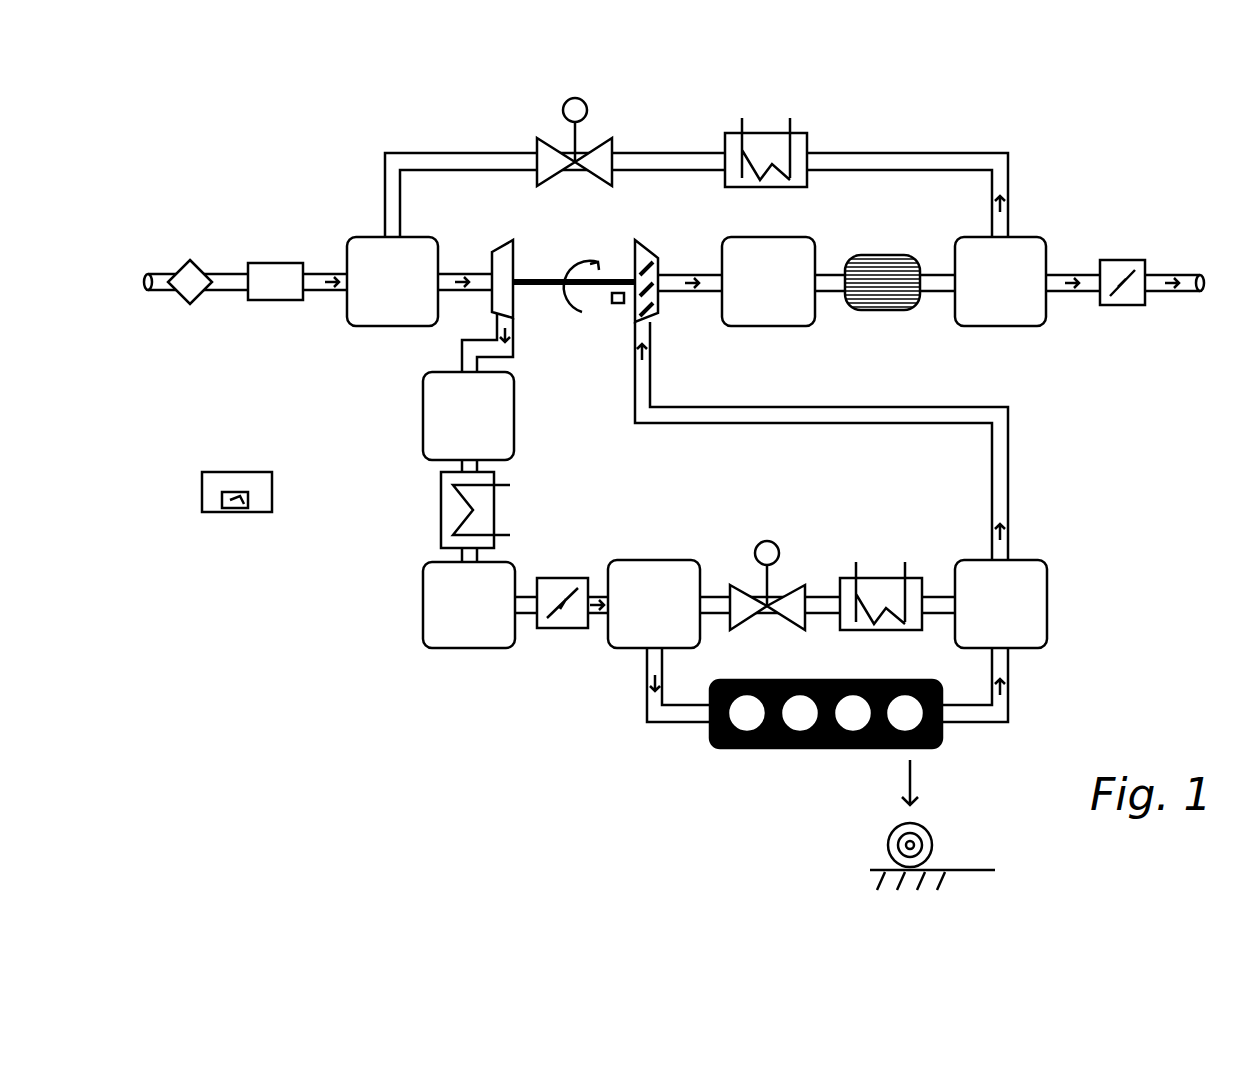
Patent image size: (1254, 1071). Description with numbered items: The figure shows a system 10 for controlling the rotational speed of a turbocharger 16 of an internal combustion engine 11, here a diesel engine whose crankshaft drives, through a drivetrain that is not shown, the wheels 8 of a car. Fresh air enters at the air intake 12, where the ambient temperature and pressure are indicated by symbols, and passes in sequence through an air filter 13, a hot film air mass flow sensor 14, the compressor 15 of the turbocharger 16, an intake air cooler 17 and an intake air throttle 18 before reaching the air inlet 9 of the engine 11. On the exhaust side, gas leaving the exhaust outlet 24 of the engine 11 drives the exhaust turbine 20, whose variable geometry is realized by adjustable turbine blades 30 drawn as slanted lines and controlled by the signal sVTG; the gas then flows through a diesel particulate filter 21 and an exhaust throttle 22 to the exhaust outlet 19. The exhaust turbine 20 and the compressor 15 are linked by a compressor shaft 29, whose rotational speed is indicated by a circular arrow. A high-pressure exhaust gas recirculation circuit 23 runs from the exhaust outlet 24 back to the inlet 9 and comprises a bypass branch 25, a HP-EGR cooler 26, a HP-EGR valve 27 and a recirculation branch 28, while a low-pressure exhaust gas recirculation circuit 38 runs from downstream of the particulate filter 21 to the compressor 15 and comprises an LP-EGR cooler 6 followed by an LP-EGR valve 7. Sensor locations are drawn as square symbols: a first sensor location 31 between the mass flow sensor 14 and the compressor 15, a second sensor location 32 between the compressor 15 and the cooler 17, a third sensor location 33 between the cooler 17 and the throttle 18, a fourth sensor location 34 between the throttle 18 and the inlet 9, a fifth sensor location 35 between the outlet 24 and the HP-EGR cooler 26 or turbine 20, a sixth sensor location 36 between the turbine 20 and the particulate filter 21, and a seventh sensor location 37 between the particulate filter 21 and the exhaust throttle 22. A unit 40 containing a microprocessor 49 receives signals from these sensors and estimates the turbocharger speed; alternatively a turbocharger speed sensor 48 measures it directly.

The LP-EGR cooler 6 is at (805, 133).
The LP-EGR valve 7 is at (600, 140).
The wheels 8 is at (935, 840).
The air inlet 9 is at (685, 712).
The system 10 is at (978, 88).
The internal combustion engine 11 is at (810, 750).
The air intake 12 is at (145, 293).
The air filter 13 is at (183, 260).
The hot film air mass flow sensor 14 is at (272, 262).
The compressor 15 is at (515, 265).
The turbocharger 16 is at (606, 275).
The intake air cooler 17 is at (440, 512).
The intake air throttle 18 is at (567, 628).
The exhaust outlet 19 is at (1200, 292).
The exhaust turbine 20 is at (640, 242).
The diesel particulate filter 21 is at (872, 255).
The exhaust throttle 22 is at (1122, 260).
The high-pressure exhaust gas recirculation circuit 23 is at (917, 670).
The exhaust outlet of the diesel engine 24 is at (962, 718).
The bypass branch 25 is at (940, 597).
The HP-EGR cooler 26 is at (880, 578).
The HP-EGR valve 27 is at (800, 585).
The recirculation branch 28 is at (712, 597).
The compressor shaft 29 is at (540, 290).
The adjustable turbine blades 30 is at (660, 312).
The first sensor location 31 is at (375, 328).
The second sensor location 32 is at (423, 414).
The third sensor location 33 is at (423, 616).
The fourth sensor location 34 is at (618, 560).
The fifth sensor location 35 is at (1047, 600).
The sixth sensor location 36 is at (770, 328).
The seventh sensor location 37 is at (1025, 236).
The low-pressure exhaust gas recirculation circuit 38 is at (812, 226).
The unit for estimating the rotational speed 40 is at (239, 490).
The turbocharger speed sensor 48 is at (618, 303).
The microprocessor 49 is at (238, 512).